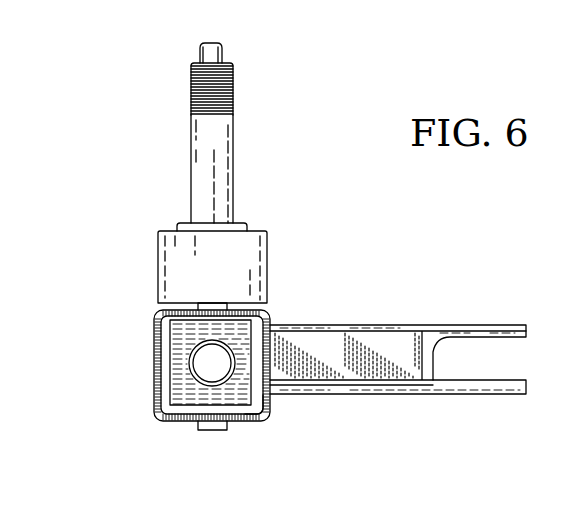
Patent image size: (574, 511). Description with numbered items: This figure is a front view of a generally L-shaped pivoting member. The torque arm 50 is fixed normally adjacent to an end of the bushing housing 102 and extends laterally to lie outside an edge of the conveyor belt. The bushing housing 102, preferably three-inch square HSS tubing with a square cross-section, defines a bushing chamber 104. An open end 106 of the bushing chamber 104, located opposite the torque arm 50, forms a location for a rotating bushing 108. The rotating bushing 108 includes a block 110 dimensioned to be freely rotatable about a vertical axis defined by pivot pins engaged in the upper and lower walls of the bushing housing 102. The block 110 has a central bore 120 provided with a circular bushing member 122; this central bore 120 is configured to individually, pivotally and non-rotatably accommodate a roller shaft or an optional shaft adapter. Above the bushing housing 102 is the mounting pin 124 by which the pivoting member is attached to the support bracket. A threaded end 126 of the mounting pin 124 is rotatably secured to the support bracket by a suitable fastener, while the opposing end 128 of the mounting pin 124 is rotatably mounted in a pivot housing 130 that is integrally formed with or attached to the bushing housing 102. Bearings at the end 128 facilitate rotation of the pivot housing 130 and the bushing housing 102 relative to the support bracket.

The torque arm 50 is at (365, 325).
The bushing housing 102 is at (155, 334).
The bushing chamber 104 is at (258, 405).
The open end 106 is at (167, 428).
The rotating bushing 108 is at (236, 393).
The block 110 is at (178, 328).
The central bore 120 is at (234, 342).
The bushing member 122 is at (198, 373).
The mounting pin 124 is at (233, 131).
The end of the mounting pin 126 is at (190, 84).
The opposing end of the mounting pin 128 is at (238, 222).
The pivot housing 130 is at (170, 230).